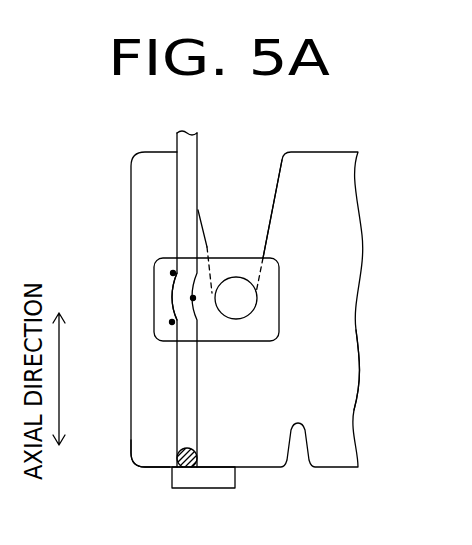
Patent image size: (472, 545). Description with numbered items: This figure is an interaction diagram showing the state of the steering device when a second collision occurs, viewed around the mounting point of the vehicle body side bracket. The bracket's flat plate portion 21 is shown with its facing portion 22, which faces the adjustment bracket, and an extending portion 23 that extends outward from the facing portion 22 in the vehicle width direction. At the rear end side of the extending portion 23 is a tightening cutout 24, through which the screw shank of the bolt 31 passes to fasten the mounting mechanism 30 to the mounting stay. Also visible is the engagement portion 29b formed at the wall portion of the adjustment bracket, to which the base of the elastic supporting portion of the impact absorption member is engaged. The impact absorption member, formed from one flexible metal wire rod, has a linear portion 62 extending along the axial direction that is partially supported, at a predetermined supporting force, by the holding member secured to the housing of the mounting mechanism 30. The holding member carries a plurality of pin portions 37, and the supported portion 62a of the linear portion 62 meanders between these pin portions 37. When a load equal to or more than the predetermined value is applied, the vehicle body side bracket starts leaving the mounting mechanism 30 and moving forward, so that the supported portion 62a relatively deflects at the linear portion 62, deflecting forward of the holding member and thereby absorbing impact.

The plate portion 21 is at (355, 305).
The facing portion 22 is at (349, 363).
The extending portion 23 is at (131, 446).
The tightening cutout 24 is at (280, 174).
The engagement portion 29b is at (217, 482).
The mounting mechanism 30 is at (280, 275).
The bolt 31 is at (242, 303).
The pin portion 37 is at (172, 324).
The linear portion 62 is at (178, 152).
The supported portion 62a is at (180, 304).